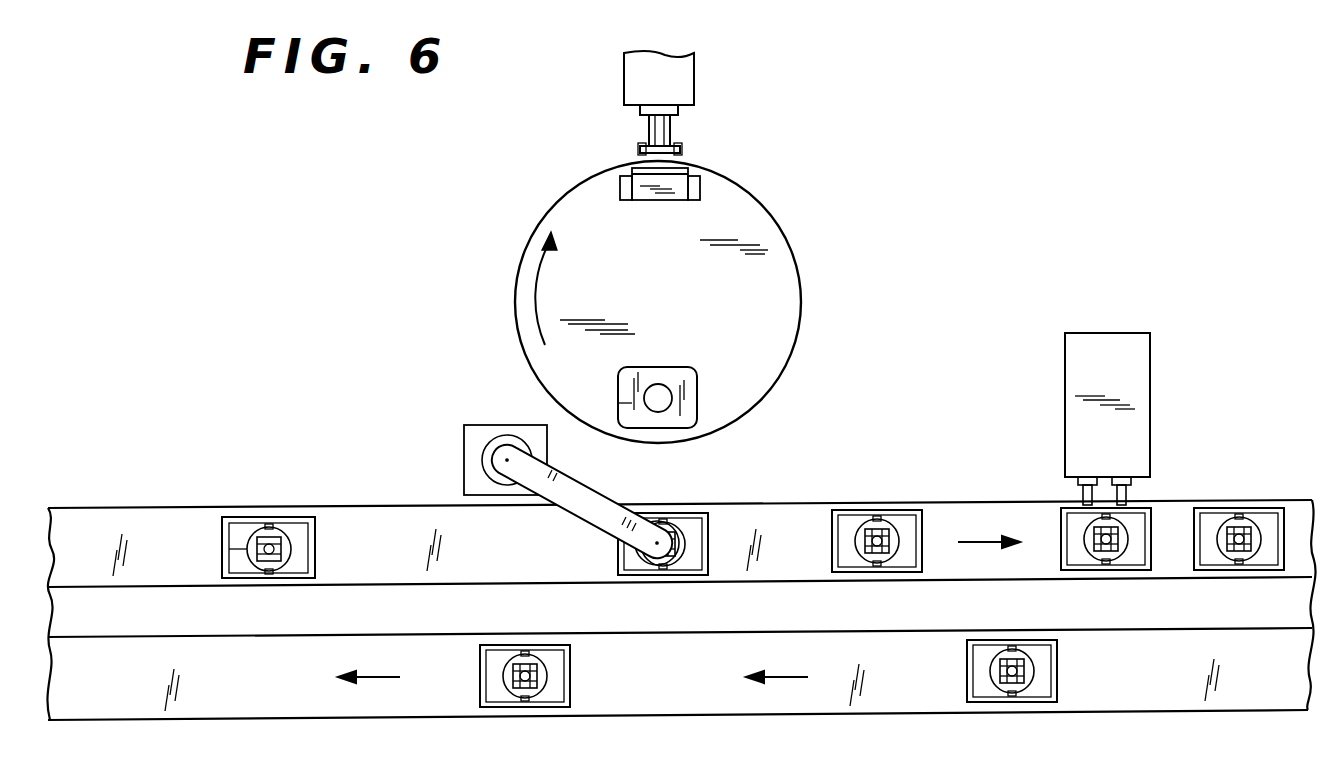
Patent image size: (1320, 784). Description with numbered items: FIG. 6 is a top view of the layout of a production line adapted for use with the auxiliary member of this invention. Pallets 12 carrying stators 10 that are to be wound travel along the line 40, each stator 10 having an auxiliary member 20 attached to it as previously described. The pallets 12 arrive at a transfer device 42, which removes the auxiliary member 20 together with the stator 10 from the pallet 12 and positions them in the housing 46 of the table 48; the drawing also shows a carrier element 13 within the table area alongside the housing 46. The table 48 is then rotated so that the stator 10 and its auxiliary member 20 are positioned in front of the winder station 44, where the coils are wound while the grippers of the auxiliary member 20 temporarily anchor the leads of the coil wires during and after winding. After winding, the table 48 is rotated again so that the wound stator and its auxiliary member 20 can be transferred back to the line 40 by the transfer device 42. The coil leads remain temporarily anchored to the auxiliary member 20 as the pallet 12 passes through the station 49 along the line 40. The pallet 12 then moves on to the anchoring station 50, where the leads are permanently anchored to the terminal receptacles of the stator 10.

The stator 10 is at (262, 532).
The pallet 12 is at (300, 525).
The disc carrier 13 is at (697, 420).
The auxiliary member 20 is at (245, 550).
The line 40 is at (215, 700).
The transfer device 42 is at (580, 491).
The winder station 44 is at (683, 92).
The housing 46 is at (700, 195).
The table 48 is at (780, 276).
The station 49 is at (855, 516).
The anchoring station 50 is at (1127, 300).